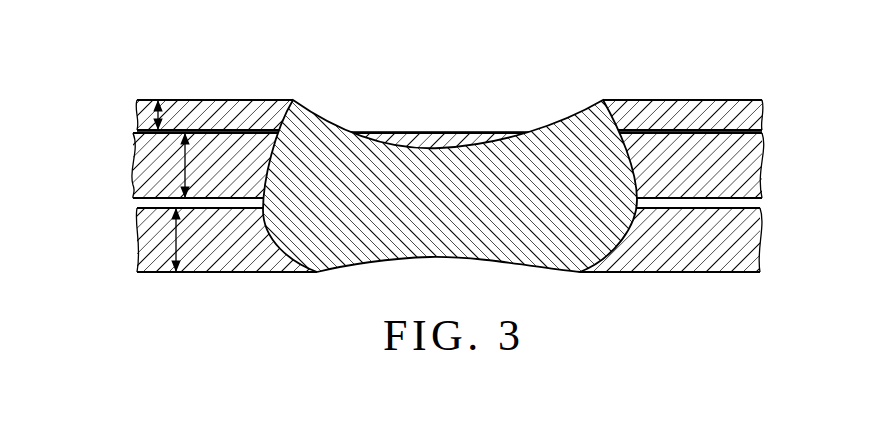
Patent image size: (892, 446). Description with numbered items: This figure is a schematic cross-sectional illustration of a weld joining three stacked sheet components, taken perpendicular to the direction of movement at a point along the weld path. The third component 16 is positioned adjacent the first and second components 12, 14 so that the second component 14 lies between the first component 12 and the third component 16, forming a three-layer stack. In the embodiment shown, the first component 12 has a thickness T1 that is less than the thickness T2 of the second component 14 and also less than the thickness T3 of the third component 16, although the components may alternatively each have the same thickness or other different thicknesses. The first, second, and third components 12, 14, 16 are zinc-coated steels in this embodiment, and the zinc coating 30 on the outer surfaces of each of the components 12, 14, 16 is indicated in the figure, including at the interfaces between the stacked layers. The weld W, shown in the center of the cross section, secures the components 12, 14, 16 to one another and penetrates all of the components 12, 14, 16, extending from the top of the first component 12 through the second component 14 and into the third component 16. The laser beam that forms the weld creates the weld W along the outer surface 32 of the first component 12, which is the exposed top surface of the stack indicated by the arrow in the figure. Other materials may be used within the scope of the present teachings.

The first component 12 is at (198, 100).
The second component 14 is at (132, 178).
The third component 16 is at (211, 273).
The zinc coating 30 is at (733, 198).
The outer surface 32 is at (446, 159).
The weld W is at (448, 174).
The thickness T1 is at (156, 115).
The thickness T2 is at (183, 165).
The thickness T3 is at (174, 251).